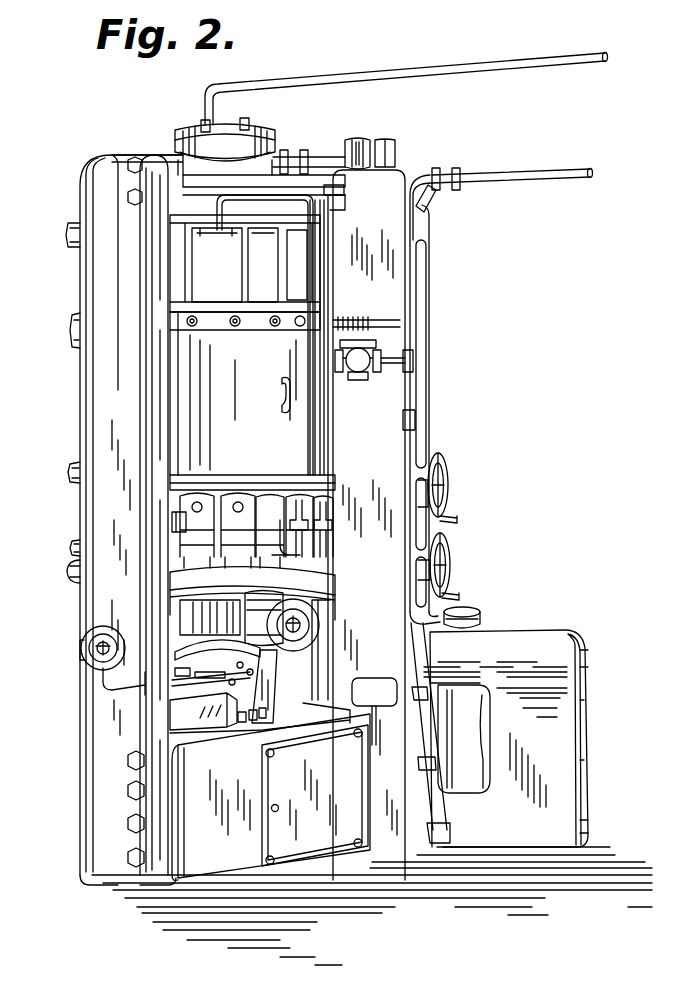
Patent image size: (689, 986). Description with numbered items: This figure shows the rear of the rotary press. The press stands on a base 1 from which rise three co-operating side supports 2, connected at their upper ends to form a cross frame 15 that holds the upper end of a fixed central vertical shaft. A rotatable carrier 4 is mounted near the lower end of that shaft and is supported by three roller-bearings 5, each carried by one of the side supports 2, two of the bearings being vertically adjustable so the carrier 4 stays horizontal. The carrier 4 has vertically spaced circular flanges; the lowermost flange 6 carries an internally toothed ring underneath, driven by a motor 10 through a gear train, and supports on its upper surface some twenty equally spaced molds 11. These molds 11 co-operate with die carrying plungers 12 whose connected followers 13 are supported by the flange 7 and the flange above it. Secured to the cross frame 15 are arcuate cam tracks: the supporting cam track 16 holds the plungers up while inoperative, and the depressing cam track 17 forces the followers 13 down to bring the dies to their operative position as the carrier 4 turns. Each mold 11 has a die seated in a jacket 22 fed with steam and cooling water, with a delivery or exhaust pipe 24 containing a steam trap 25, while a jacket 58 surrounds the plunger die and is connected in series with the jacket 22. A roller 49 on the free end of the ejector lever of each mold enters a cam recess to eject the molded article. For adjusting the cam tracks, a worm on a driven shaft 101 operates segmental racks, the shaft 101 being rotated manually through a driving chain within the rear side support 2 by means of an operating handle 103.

The base 1 is at (212, 862).
The side support 2 is at (392, 185).
The rotatable carrier 4 is at (214, 612).
The roller-bearing 5 is at (173, 600).
The lowermost flange 6 is at (175, 565).
The circular flange 7 is at (70, 472).
The motor 10 is at (518, 628).
The mold 11 is at (185, 575).
The die carrying plunger 12 is at (260, 500).
The follower 13 is at (226, 325).
The cross frame 15 is at (310, 175).
The supporting cam track 16 is at (185, 302).
The depressing cam track 17 is at (218, 328).
The jacket 22 is at (172, 530).
The delivery or exhaust pipe 24 is at (290, 505).
The steam trap 25 is at (318, 504).
The roller 49 is at (70, 566).
The jacket 58 is at (172, 518).
The driven shaft 101 is at (345, 152).
The operating handle 103 is at (439, 466).